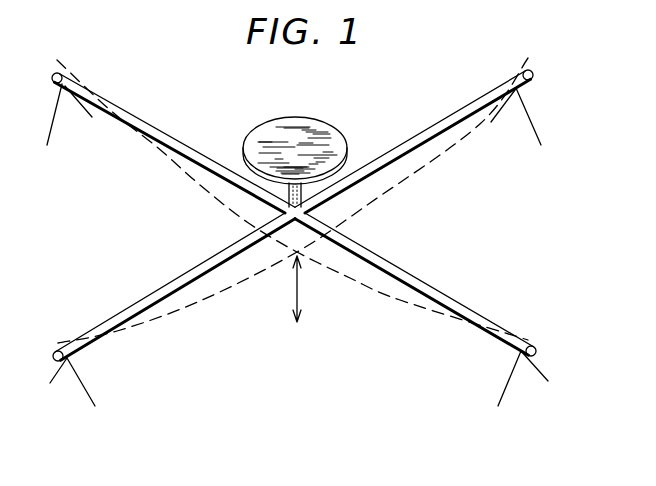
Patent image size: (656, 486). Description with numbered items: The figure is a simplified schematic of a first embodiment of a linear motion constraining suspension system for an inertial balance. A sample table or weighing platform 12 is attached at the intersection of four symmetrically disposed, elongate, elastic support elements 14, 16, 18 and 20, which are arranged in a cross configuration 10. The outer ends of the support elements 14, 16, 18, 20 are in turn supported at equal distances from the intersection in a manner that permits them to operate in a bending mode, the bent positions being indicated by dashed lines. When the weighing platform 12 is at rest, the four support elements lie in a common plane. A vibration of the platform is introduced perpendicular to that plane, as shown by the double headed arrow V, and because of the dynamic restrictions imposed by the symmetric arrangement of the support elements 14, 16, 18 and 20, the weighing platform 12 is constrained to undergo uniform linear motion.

The cross configuration 10 is at (255, 341).
The weighing platform 12 is at (328, 130).
The support element 14 is at (471, 108).
The support element 16 is at (456, 308).
The support element 18 is at (128, 310).
The support element 20 is at (157, 128).